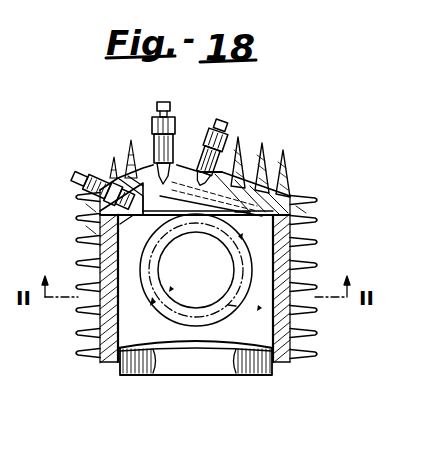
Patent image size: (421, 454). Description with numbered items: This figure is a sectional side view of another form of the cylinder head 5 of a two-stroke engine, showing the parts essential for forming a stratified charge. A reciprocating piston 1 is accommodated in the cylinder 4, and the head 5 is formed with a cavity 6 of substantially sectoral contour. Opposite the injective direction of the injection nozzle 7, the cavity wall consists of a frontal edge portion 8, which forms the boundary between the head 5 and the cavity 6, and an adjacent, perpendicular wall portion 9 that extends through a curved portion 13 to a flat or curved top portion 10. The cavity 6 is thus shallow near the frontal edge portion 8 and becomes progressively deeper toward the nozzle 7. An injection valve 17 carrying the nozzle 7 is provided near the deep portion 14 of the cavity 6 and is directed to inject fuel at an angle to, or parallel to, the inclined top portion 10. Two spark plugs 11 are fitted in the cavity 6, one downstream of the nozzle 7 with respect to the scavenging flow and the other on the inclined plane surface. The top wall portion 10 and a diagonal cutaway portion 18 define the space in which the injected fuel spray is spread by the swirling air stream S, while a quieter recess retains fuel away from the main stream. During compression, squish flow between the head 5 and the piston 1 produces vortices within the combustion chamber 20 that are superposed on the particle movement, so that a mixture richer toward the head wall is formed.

The reciprocating piston 1 is at (212, 366).
The cylinder 4 is at (116, 360).
The cylinder head 5 is at (100, 232).
The cavity 6 is at (178, 199).
The injection nozzle 7 is at (150, 168).
The frontal edge portion 8 is at (296, 227).
The wall portion 9 is at (240, 217).
The top portion 10 is at (232, 196).
The spark plugs 11 is at (95, 172).
The curved portion 13 is at (280, 188).
The deep portion 14 is at (128, 170).
The injection valve 17 is at (160, 110).
The diagonal cutaway portion 18 is at (150, 224).
The combustion chamber 20 is at (158, 331).
The swirling air stream S is at (233, 308).